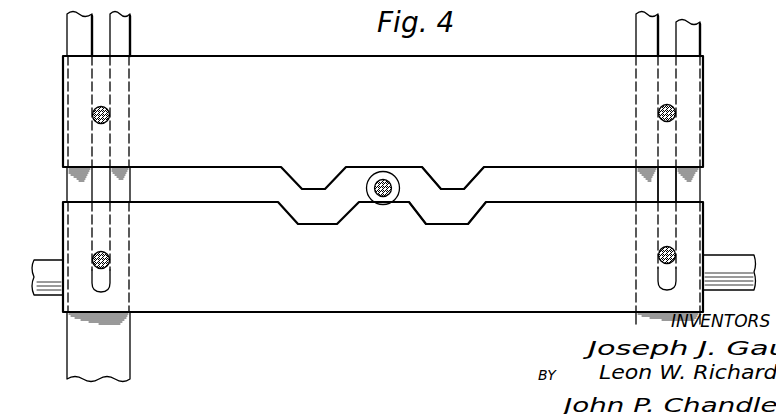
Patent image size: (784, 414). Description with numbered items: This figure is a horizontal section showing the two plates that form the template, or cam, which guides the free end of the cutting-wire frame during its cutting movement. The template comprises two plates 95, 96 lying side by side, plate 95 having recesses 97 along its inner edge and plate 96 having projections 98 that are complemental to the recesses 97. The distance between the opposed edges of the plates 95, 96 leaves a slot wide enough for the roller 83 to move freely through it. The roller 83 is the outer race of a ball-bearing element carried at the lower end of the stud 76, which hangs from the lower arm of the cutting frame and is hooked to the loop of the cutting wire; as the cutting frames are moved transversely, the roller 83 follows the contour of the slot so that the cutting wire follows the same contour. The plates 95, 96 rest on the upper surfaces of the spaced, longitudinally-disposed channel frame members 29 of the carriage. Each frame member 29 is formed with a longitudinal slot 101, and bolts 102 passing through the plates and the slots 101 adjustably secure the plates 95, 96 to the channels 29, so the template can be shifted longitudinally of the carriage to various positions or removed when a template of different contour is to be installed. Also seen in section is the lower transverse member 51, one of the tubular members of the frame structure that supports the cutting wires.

The plate 96 is at (591, 54).
The plate 95 is at (535, 305).
The longitudinal frame member 29 is at (698, 180).
The bolt 102 is at (673, 106).
The longitudinal slot 101 is at (666, 180).
The stud 76 is at (383, 178).
The roller 83 is at (379, 203).
The projection 98 is at (482, 168).
The recess 97 is at (461, 216).
The lower transverse member 51 is at (730, 260).